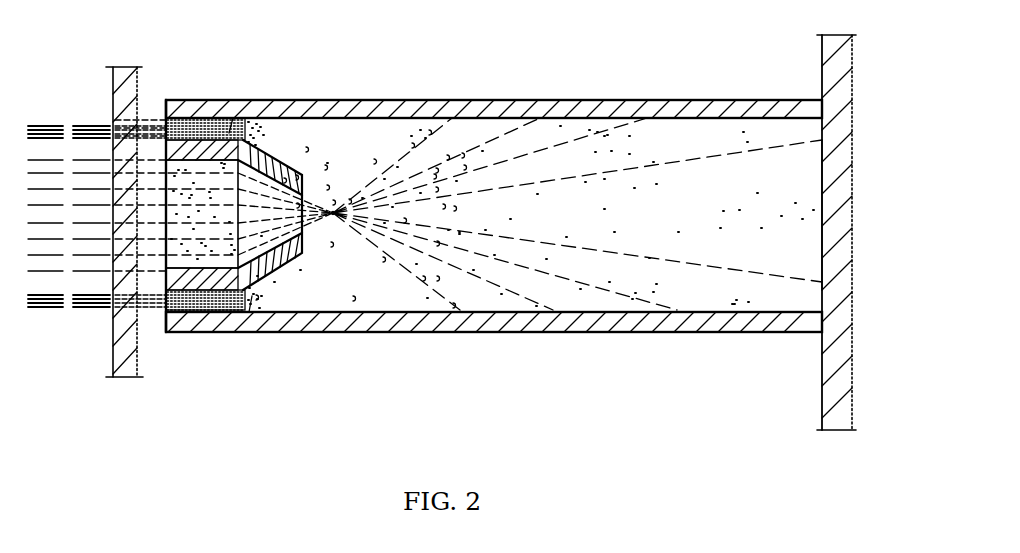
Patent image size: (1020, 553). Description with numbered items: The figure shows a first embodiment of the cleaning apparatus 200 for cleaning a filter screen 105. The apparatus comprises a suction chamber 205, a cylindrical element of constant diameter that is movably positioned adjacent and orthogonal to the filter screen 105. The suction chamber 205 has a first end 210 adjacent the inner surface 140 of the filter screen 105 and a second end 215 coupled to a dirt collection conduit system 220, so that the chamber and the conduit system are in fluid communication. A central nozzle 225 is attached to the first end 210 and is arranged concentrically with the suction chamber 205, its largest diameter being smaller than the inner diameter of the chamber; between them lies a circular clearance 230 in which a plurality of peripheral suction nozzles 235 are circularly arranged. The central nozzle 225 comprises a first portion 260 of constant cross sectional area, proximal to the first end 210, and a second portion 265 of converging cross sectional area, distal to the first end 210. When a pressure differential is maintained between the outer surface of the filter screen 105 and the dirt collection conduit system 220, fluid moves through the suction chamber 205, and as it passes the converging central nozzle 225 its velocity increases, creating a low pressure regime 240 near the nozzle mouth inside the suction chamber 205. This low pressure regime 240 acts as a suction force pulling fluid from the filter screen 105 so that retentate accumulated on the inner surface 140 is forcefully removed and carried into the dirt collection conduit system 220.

The filter screen 105 is at (110, 350).
The inner surface 140 is at (140, 70).
The cleaning apparatus 200 is at (138, 391).
The suction chamber 205 is at (525, 98).
The first end 210 is at (165, 100).
The second end 215 is at (850, 83).
The dirt collection conduit system 220 is at (850, 147).
The central nozzle 225 is at (262, 118).
The circular clearance 230 is at (188, 115).
The peripheral suction nozzles 235 is at (233, 118).
The low pressure regime 240 is at (333, 213).
The first portion 260 is at (210, 312).
The second portion 265 is at (280, 170).